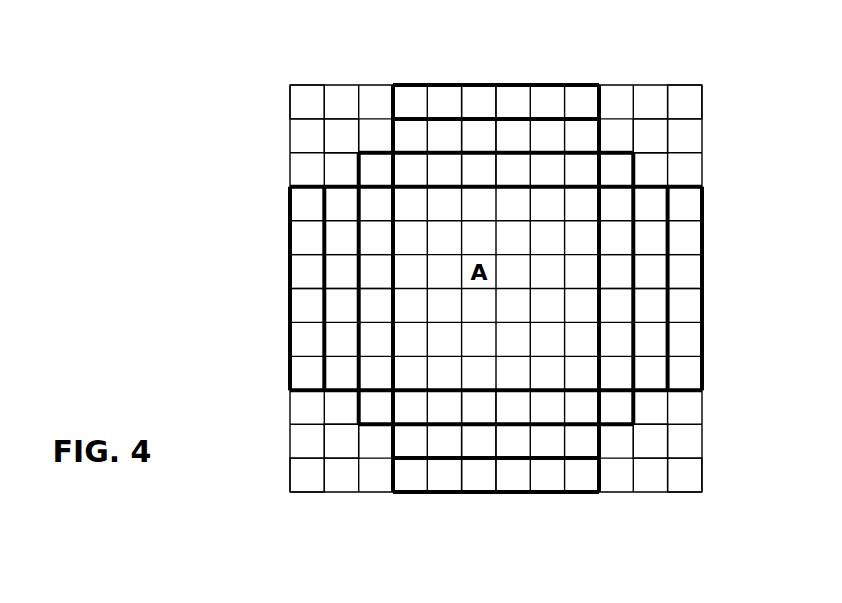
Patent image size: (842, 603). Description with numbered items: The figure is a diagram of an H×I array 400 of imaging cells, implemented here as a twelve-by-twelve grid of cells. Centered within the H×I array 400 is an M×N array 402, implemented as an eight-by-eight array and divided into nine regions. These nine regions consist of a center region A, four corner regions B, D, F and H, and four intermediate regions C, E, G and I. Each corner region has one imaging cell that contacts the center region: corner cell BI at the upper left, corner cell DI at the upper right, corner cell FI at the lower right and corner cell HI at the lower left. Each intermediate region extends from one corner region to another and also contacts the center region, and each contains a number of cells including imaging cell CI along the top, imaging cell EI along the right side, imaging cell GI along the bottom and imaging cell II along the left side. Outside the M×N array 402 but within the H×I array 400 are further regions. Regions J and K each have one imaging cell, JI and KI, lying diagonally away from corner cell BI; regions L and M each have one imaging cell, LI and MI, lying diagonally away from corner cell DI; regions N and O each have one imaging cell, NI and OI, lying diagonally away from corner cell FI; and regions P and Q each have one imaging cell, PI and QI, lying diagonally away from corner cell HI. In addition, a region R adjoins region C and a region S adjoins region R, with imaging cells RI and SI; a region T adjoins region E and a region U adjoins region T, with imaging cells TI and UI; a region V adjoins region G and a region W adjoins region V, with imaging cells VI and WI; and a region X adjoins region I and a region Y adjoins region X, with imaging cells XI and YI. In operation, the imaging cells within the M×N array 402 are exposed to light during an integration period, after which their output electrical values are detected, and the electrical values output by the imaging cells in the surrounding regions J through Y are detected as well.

The H×I array 400 is at (506, 84).
The M×N array 402 is at (542, 151).
The imaging cell of region K KI is at (302, 85).
The imaging cell of region J JI is at (328, 130).
The imaging cell of corner region B BI is at (382, 151).
The imaging cell of intermediate region C CI is at (464, 171).
The imaging cell of region R RI is at (467, 146).
The imaging cell of region S SI is at (474, 86).
The imaging cell of region L LI is at (653, 122).
The imaging cell of region M MI is at (684, 85).
The imaging cell of corner region D DI is at (636, 168).
The imaging cell of region X XI is at (346, 258).
The imaging cell of region Y YI is at (304, 262).
The imaging cell of intermediate region I II is at (377, 292).
The imaging cell of intermediate region E EI is at (618, 254).
The imaging cell of region U UI is at (678, 284).
The imaging cell of region T TI is at (641, 284).
The imaging cell of corner region F FI is at (634, 405).
The imaging cell of intermediate region G GI is at (493, 408).
The imaging cell of region V VI is at (463, 449).
The imaging cell of region W WI is at (464, 478).
The imaging cell of corner region H HI is at (379, 426).
The imaging cell of region P PI is at (355, 450).
The imaging cell of region Q QI is at (313, 482).
The imaging cell of region N NI is at (654, 452).
The imaging cell of region O OI is at (690, 484).